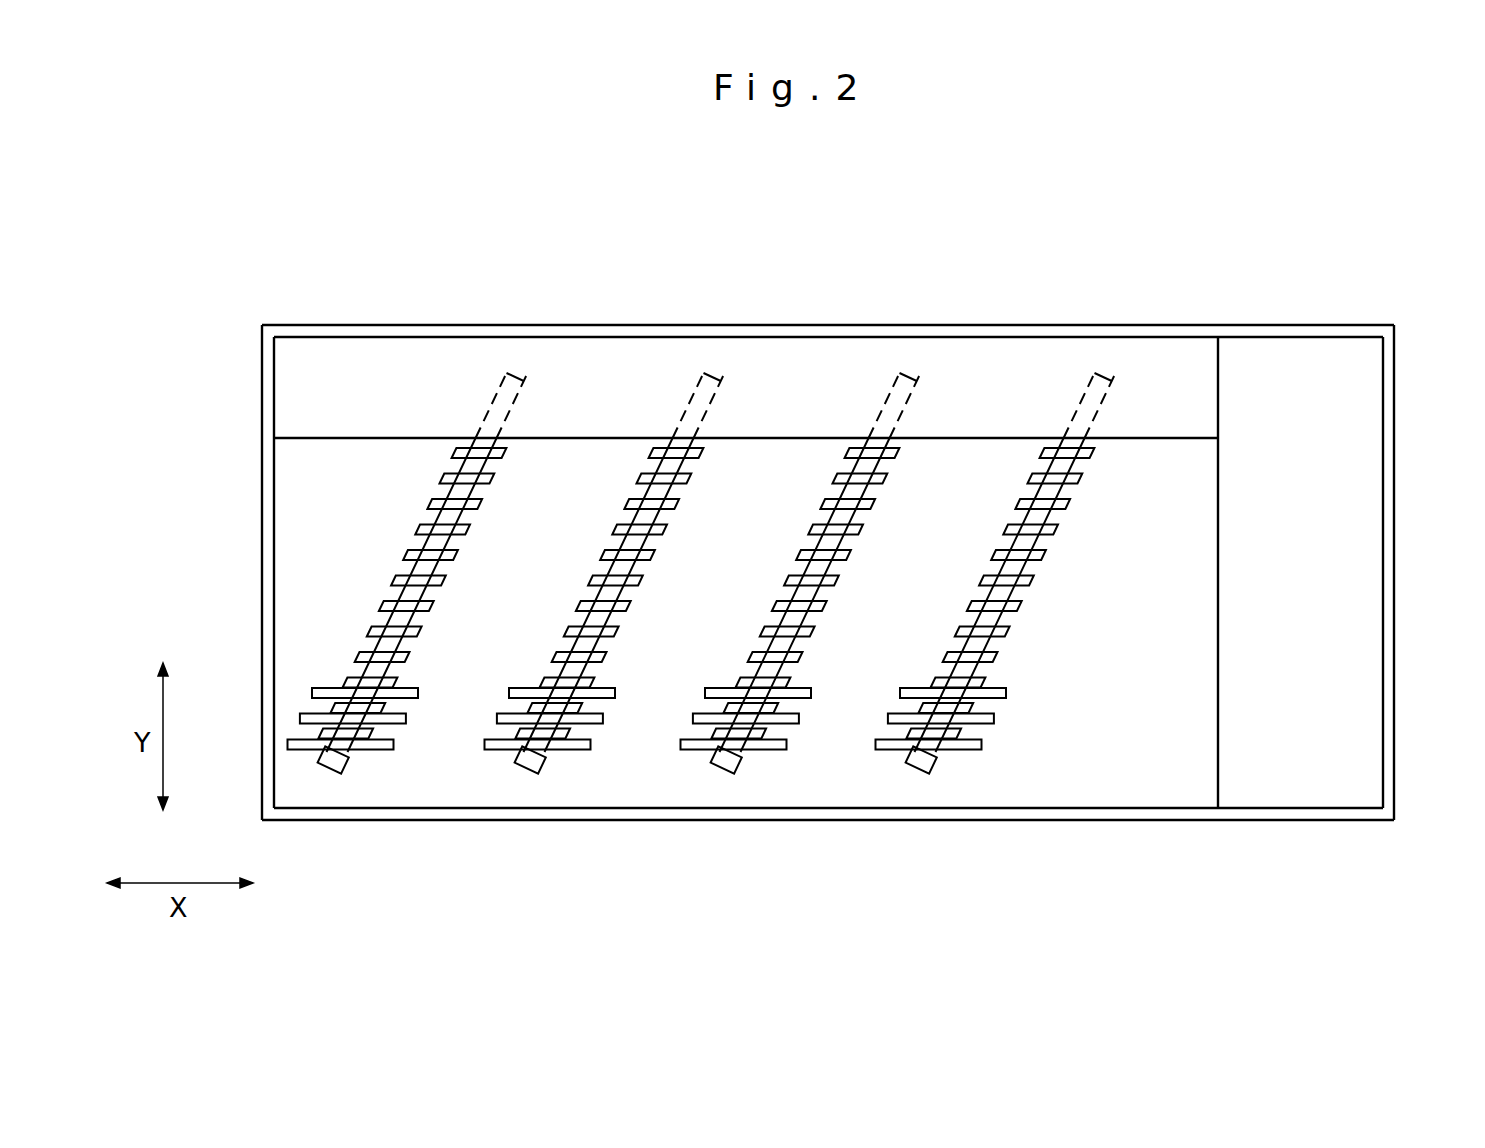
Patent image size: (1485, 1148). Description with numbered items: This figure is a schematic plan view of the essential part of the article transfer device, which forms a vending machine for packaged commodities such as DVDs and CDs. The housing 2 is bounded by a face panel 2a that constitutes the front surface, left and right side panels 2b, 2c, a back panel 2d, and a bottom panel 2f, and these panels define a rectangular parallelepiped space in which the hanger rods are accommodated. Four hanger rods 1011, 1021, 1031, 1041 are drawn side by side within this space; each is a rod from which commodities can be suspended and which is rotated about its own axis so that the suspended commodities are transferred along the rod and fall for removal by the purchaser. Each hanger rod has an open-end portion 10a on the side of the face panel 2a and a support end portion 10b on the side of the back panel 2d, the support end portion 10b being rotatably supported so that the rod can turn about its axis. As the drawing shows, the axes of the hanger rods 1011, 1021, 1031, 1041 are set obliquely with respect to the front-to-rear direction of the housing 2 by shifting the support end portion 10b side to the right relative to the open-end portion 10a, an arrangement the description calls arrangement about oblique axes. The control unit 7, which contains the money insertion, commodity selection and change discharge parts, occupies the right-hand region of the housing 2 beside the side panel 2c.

The housing 2 is at (827, 568).
The face panel 2a is at (1126, 815).
The left side panel 2b is at (268, 509).
The right side panel 2c is at (1390, 433).
The back panel 2d is at (1025, 325).
The bottom panel 2f is at (400, 452).
The control unit 7 is at (1312, 628).
The hanger rod 1011 is at (447, 518).
The hanger rod 1021 is at (644, 518).
The hanger rod 1031 is at (840, 518).
The hanger rod 1041 is at (1033, 518).
The open-end portion 10a is at (329, 768).
The support end portion 10b is at (523, 381).